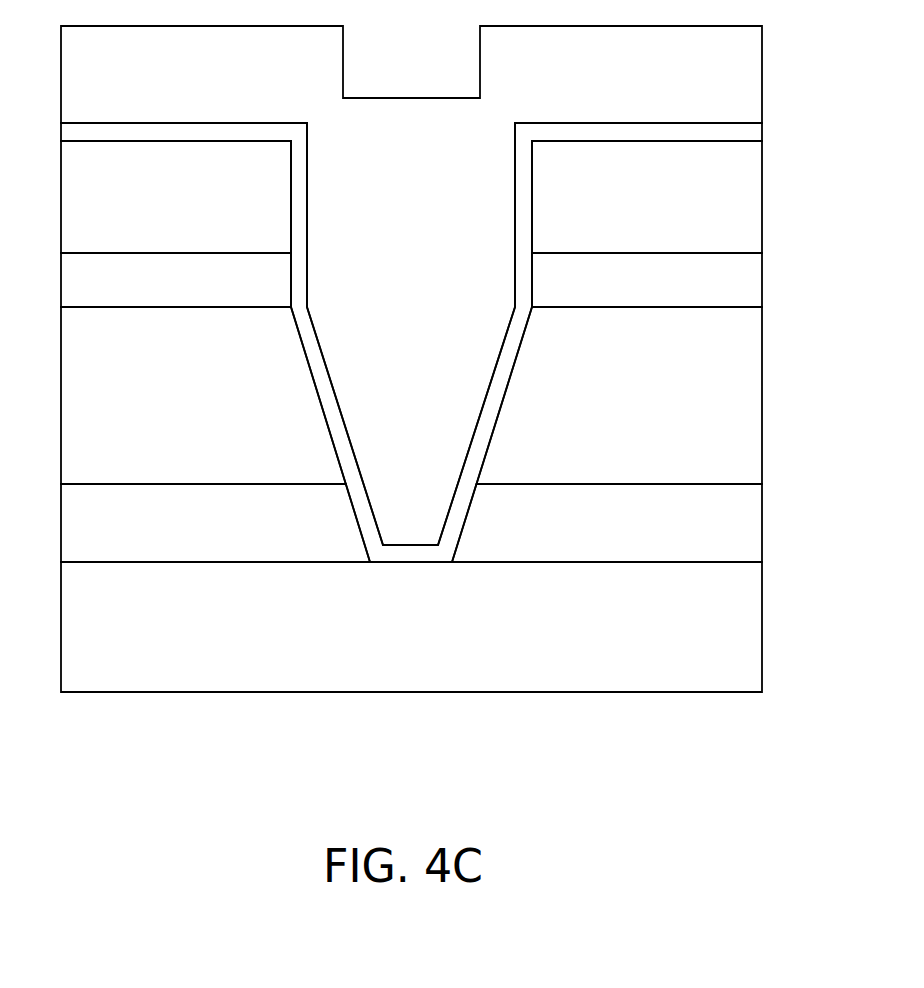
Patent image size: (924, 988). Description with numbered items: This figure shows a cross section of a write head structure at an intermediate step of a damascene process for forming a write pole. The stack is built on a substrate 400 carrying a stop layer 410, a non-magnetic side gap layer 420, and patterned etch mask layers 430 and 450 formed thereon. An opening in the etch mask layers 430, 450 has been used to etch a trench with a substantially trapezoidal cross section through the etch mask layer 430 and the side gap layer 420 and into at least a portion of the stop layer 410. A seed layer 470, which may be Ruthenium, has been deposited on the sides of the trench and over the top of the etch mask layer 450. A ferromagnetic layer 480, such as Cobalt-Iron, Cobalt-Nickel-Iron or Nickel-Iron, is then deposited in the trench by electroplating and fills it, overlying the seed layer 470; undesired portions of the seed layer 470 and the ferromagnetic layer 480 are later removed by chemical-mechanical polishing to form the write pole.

The substrate 400 is at (436, 654).
The stop layer 410 is at (194, 539).
The side gap layer 420 is at (194, 411).
The etch mask layer 430 is at (194, 292).
The etch mask layer 450 is at (194, 202).
The seed layer 470 is at (752, 135).
The ferromagnetic layer 480 is at (677, 91).